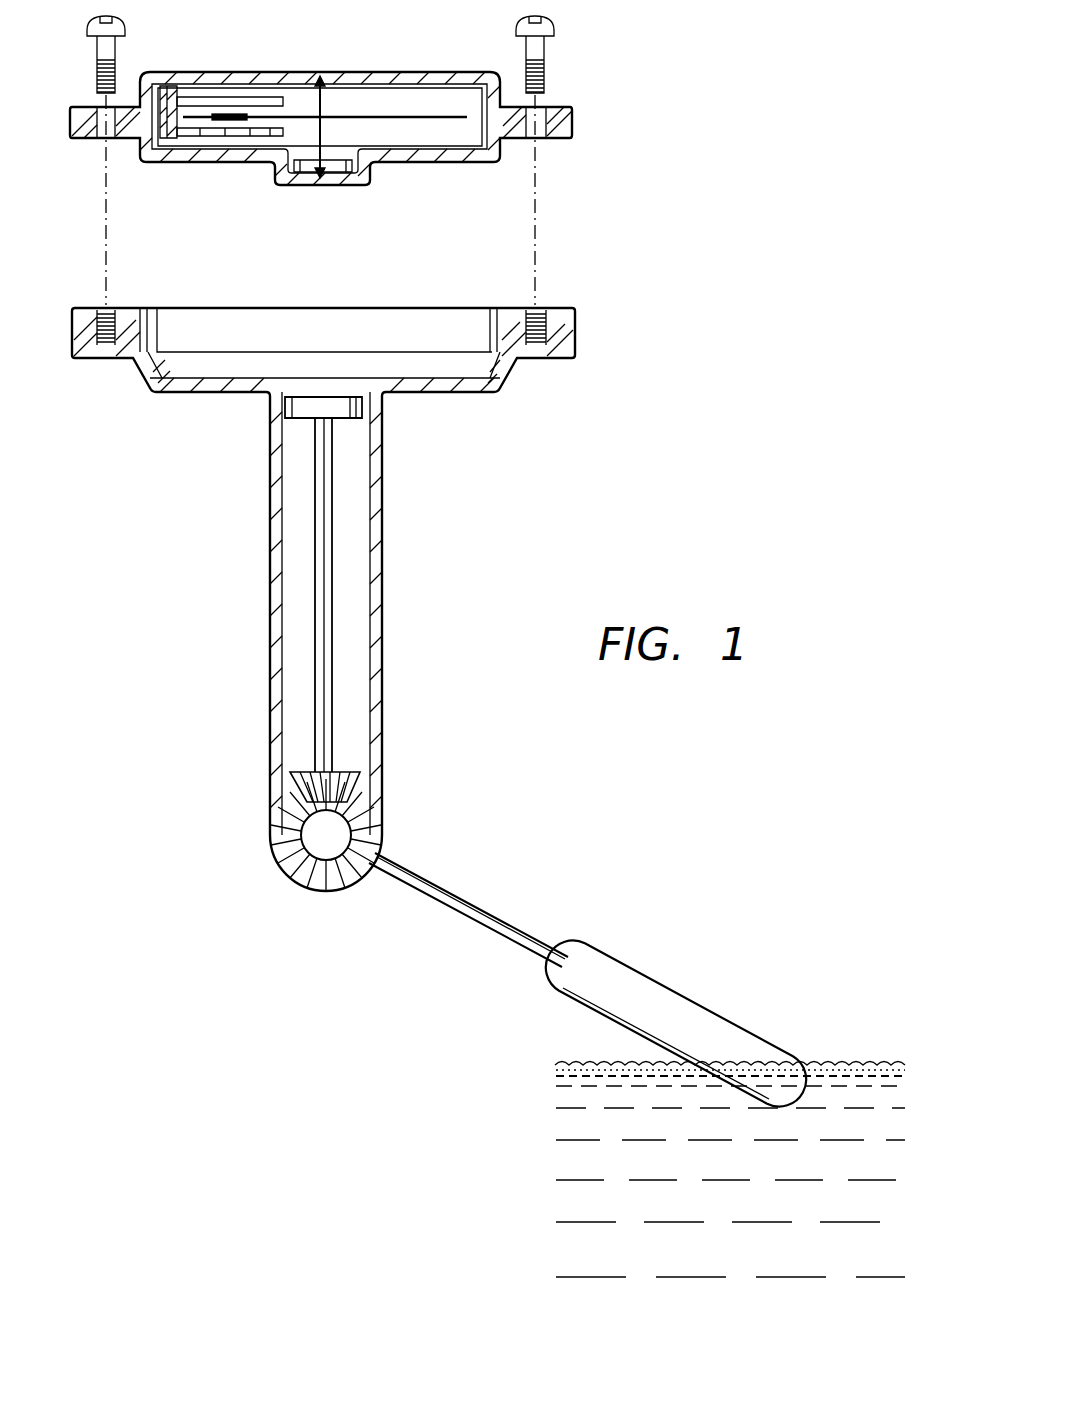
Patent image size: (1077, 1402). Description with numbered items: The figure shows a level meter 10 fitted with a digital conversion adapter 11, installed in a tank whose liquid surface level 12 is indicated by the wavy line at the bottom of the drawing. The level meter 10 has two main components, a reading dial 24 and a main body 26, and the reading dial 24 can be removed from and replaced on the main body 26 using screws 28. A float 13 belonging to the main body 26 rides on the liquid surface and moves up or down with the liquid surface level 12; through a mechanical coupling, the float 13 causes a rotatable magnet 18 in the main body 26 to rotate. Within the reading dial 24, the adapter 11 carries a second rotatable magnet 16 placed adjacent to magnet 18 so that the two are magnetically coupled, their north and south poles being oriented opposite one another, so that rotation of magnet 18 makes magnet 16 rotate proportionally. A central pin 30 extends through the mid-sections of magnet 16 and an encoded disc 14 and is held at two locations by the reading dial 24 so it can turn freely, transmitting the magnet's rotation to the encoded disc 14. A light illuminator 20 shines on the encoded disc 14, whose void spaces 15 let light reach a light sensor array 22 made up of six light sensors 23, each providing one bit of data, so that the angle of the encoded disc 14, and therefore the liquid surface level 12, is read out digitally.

The level meter 10 is at (703, 63).
The digital conversion adapter 11 is at (395, 218).
The liquid surface level 12 is at (578, 1062).
The float 13 is at (686, 1007).
The encoded disc 14 is at (427, 122).
The void spaces 15 is at (232, 113).
The magnet 16 is at (312, 168).
The magnet 18 is at (292, 409).
The light illuminator 20 is at (215, 98).
The light sensor array 22 is at (185, 140).
The light sensors 23 is at (216, 136).
The reading dial 24 is at (396, 72).
The main body 26 is at (240, 583).
The screws 28 is at (95, 46).
The central pin 30 is at (326, 98).